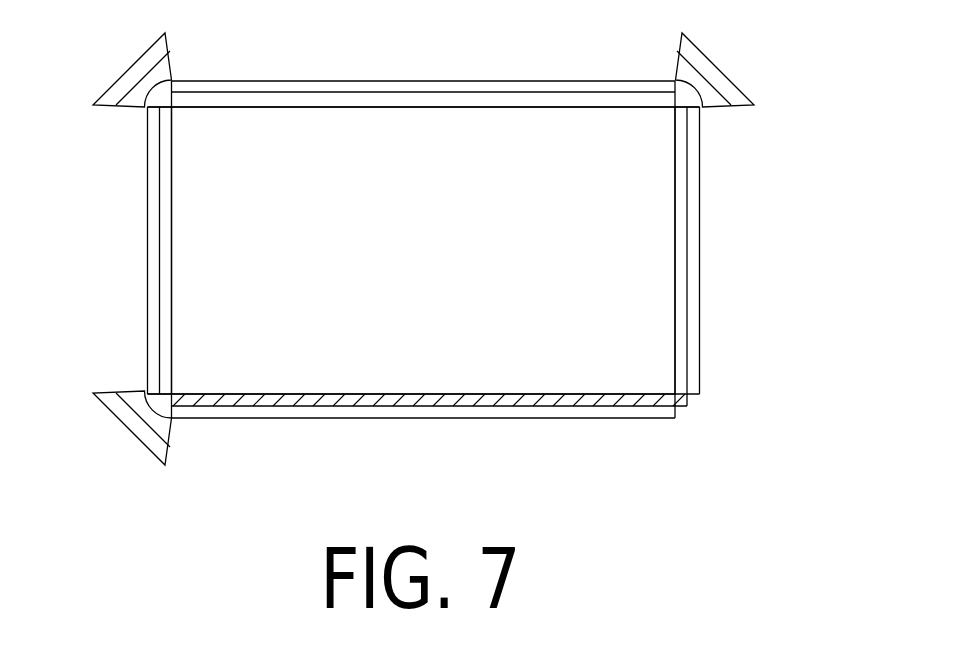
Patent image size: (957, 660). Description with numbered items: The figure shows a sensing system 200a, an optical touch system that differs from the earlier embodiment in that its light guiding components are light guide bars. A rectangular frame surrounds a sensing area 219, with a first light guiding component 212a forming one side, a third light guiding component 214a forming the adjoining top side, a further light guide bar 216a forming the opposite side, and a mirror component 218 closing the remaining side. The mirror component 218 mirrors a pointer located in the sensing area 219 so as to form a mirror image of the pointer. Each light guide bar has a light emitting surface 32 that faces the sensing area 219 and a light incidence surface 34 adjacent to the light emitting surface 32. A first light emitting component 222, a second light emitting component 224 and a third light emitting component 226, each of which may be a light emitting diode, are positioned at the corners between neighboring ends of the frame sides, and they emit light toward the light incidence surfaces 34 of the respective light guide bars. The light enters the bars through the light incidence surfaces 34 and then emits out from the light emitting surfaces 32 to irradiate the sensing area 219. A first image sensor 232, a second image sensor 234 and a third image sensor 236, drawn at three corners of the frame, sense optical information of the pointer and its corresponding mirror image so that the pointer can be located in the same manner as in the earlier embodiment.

The sensing system 200a is at (847, 480).
The first light guiding component 212a is at (168, 170).
The third light guiding component 214a is at (425, 103).
The right frame member 216a is at (682, 255).
The mirror component 218 is at (503, 406).
The sensing area 219 is at (200, 313).
The first light emitting component 222 is at (168, 80).
The second light emitting component 224 is at (700, 108).
The third light emitting component 226 is at (162, 412).
The first image sensor 232 is at (145, 58).
The second image sensor 234 is at (700, 60).
The third image sensor 236 is at (140, 430).
The light emitting surface 32 is at (525, 98).
The light incidence surface 34 is at (180, 98).